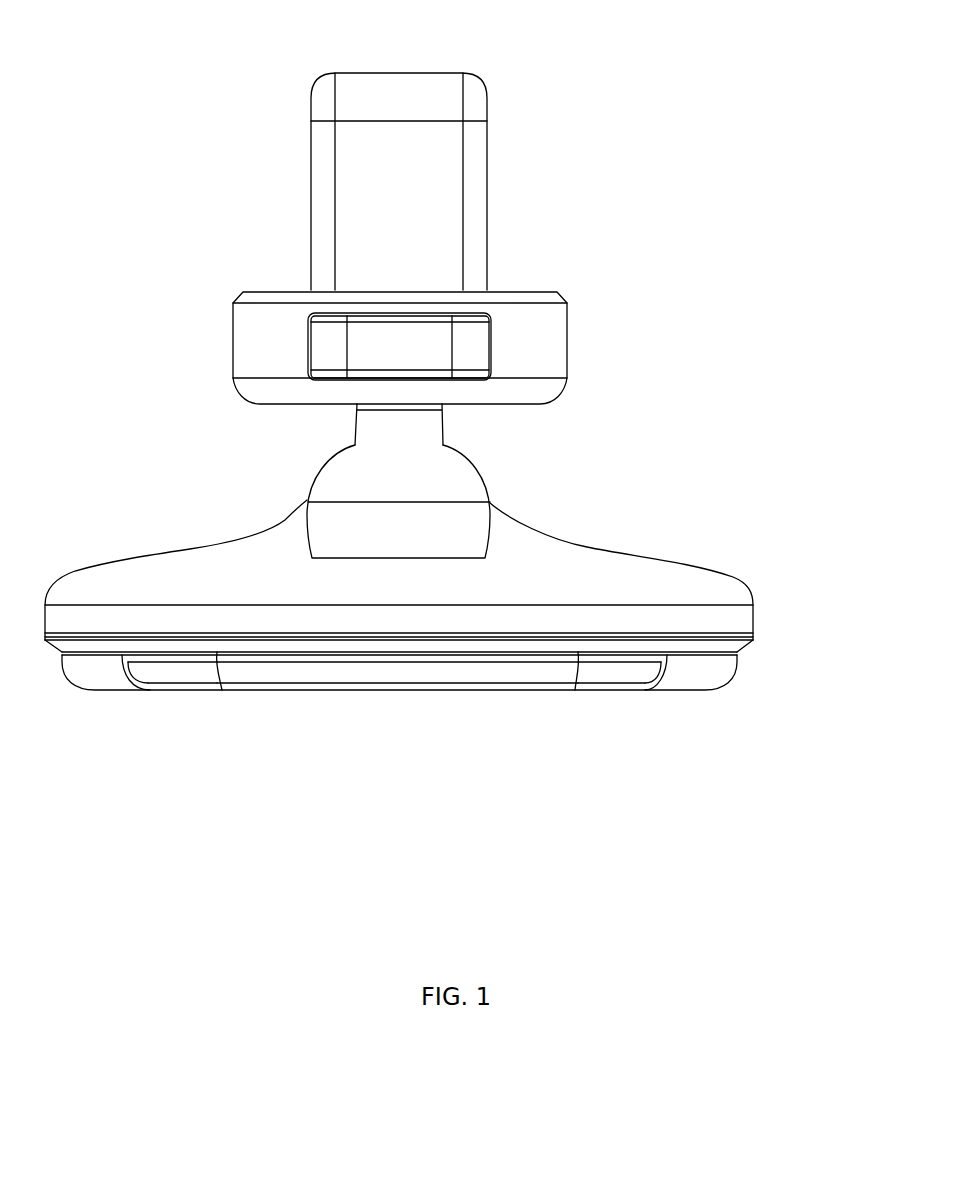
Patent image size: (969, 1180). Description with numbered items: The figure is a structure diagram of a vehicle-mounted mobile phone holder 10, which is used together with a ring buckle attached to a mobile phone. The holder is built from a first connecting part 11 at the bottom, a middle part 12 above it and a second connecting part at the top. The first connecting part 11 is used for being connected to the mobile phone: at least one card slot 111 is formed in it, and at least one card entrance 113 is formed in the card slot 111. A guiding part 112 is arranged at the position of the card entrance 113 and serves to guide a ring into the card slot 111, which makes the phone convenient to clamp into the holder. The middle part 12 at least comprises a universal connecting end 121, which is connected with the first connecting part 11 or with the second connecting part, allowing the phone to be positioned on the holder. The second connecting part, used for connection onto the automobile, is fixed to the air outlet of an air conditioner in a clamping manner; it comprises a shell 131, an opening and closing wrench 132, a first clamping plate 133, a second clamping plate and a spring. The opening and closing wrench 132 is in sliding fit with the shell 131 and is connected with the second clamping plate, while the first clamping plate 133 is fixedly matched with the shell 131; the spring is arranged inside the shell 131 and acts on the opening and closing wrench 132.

The vehicle-mounted mobile phone holder 10 is at (310, 131).
The first clamping plate 133 is at (431, 196).
The shell 131 is at (233, 326).
The opening and closing wrench 132 is at (446, 350).
The middle part 12 is at (429, 481).
The universal connecting end 121 is at (321, 471).
The first connecting part 11 is at (595, 543).
The card slot 111 is at (269, 671).
The guiding part 112 is at (614, 669).
The card entrance 113 is at (395, 681).